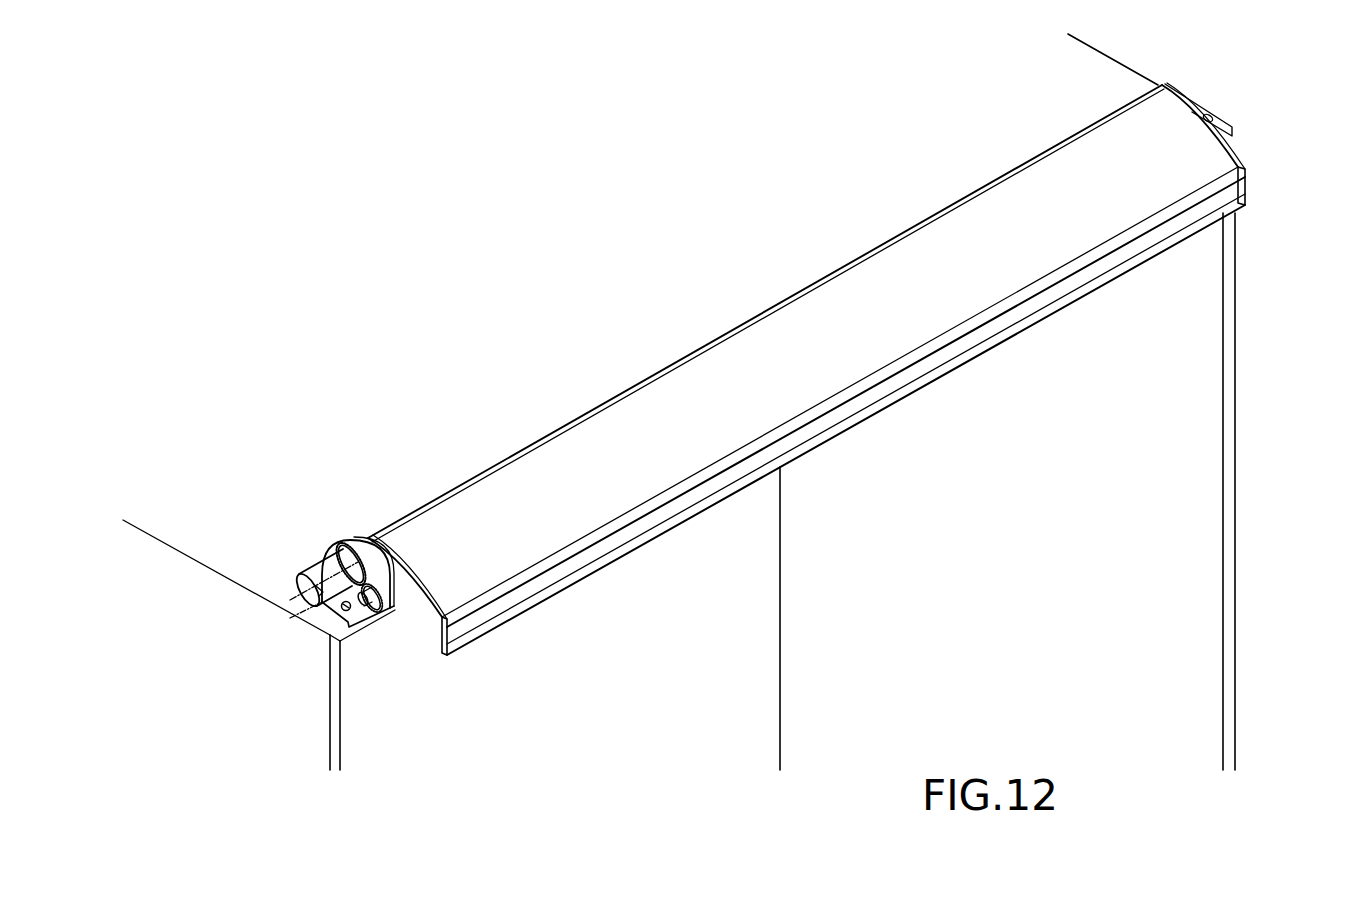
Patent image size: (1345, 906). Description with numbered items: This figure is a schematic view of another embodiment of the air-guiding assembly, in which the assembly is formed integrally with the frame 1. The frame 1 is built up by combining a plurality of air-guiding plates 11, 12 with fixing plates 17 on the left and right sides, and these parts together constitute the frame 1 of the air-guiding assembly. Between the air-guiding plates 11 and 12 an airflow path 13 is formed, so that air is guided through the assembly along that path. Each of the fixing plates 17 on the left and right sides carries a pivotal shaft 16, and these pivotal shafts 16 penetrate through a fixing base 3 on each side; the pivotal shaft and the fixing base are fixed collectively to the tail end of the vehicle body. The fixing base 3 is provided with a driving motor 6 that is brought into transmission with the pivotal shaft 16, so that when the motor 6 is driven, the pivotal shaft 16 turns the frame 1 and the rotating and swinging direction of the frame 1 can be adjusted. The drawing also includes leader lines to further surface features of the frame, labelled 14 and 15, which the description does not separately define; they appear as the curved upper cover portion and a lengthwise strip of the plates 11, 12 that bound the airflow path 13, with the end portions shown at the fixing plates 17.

The frame 1 is at (628, 363).
The fixing base 3 is at (357, 540).
The driving motor 6 is at (309, 557).
The air-guiding plate 11 is at (753, 340).
The air-guiding plate 12 is at (590, 572).
The airflow path 13 is at (800, 448).
The curved cover 14 is at (445, 478).
The guide strip 15 is at (655, 523).
The pivotal shaft 16 is at (355, 610).
The fixing plate 17 is at (420, 617).